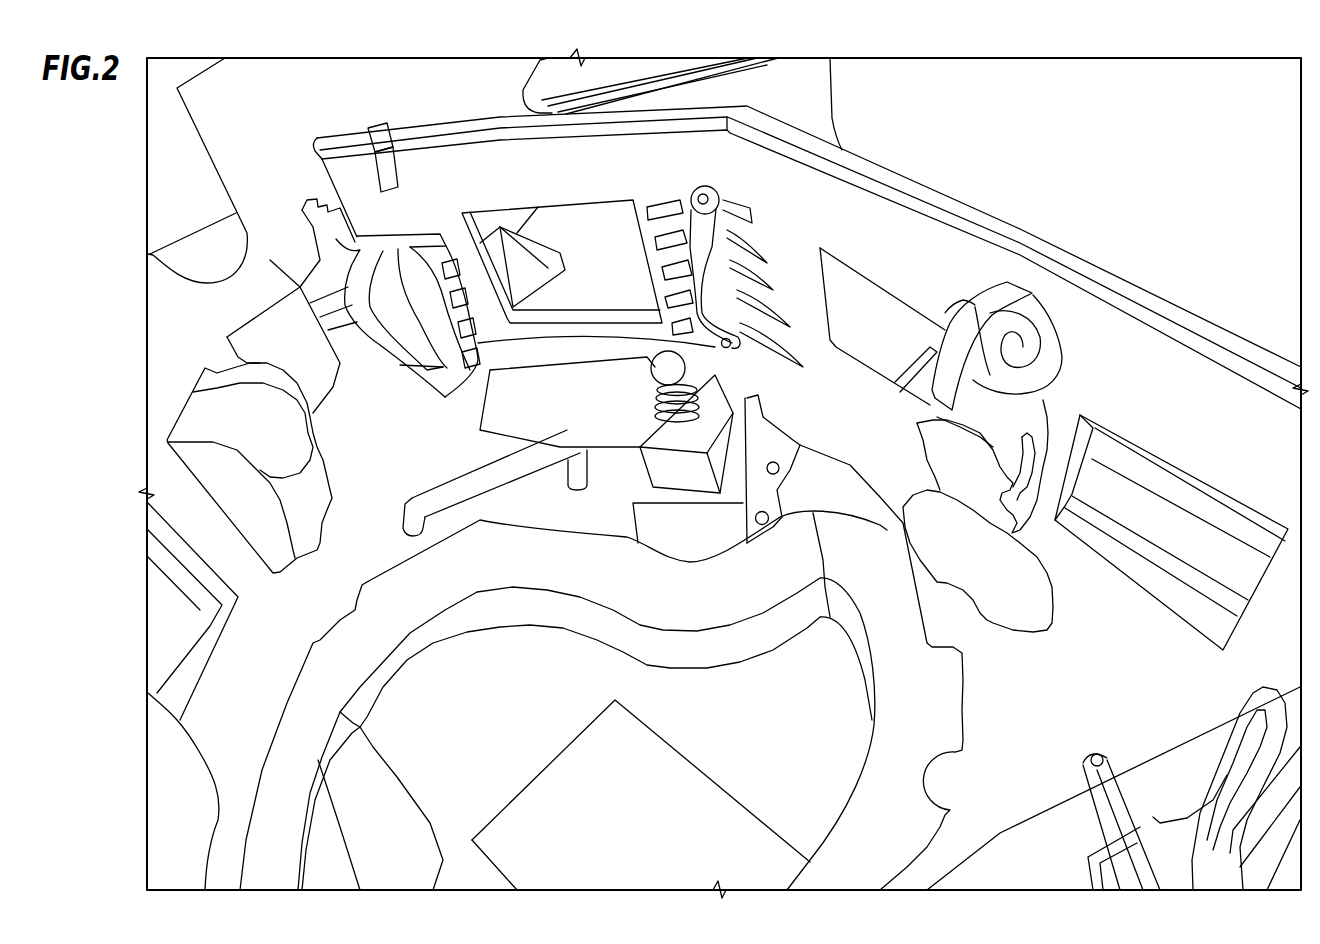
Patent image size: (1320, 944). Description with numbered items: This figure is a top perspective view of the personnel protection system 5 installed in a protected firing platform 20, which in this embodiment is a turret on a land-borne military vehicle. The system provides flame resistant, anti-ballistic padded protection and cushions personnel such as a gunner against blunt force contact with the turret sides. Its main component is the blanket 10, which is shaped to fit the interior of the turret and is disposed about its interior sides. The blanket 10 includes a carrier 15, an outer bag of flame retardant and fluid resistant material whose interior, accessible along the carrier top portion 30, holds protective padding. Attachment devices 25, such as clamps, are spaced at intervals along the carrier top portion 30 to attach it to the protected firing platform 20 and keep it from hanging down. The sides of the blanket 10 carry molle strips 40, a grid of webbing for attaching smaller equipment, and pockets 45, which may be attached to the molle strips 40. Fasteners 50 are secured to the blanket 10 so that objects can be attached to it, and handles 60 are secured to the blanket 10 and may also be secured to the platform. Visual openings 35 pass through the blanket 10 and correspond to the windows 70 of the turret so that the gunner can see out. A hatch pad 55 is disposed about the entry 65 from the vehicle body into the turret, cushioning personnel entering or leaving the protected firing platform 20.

The personnel protection system 5 is at (1130, 243).
The blanket 10 is at (853, 223).
The carrier 15 is at (930, 240).
The protected firing platform 20 is at (1170, 307).
The attachment devices 25 is at (373, 137).
The carrier top portion 30 is at (343, 143).
The visual openings 35 is at (611, 286).
The molle strips 40 is at (425, 237).
The pockets 45 is at (268, 462).
The fasteners 50 is at (1000, 280).
The hatch pad 55 is at (920, 683).
The handles 60 is at (718, 198).
The entry 65 is at (793, 807).
The windows 70 is at (1106, 477).